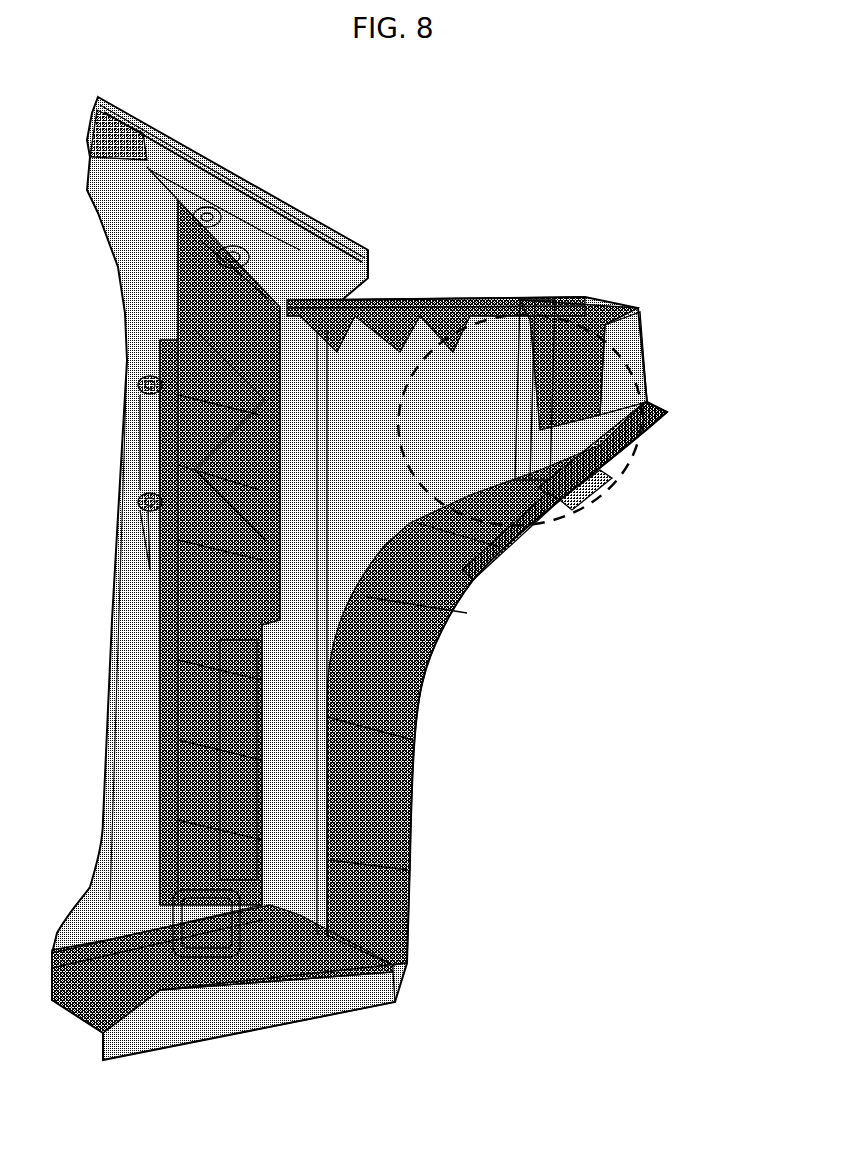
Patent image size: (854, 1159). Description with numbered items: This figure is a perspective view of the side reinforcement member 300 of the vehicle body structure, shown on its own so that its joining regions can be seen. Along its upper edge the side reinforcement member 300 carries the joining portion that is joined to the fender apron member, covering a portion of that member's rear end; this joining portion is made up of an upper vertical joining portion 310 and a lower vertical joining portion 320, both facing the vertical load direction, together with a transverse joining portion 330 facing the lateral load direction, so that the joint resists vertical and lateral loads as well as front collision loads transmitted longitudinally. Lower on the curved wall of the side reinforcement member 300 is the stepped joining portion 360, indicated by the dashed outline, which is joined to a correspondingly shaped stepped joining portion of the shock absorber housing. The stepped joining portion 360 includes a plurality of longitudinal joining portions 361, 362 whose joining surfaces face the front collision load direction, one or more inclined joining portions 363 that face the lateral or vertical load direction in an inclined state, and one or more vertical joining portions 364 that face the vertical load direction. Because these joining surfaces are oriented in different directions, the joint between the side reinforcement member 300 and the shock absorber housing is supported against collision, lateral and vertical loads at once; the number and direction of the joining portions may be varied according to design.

The side reinforcement member 300 is at (359, 578).
The upper vertical joining portion 310 is at (600, 296).
The lower vertical joining portion 320 is at (670, 410).
The transverse joining portion 330 is at (650, 340).
The stepped joining portion 360 is at (562, 509).
The longitudinal joining portion 361 is at (548, 330).
The longitudinal joining portion 362 is at (480, 588).
The inclined joining portion 363 is at (540, 523).
The vertical joining portion 364 is at (597, 478).